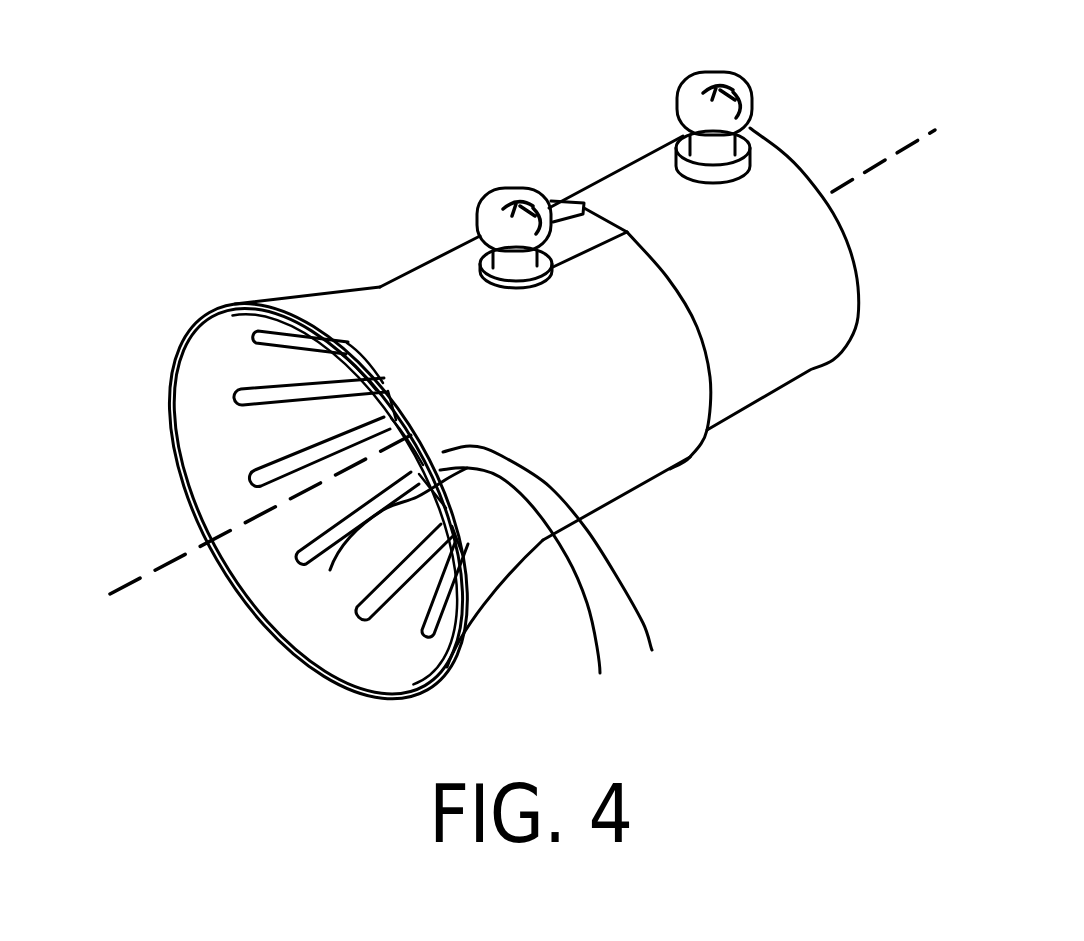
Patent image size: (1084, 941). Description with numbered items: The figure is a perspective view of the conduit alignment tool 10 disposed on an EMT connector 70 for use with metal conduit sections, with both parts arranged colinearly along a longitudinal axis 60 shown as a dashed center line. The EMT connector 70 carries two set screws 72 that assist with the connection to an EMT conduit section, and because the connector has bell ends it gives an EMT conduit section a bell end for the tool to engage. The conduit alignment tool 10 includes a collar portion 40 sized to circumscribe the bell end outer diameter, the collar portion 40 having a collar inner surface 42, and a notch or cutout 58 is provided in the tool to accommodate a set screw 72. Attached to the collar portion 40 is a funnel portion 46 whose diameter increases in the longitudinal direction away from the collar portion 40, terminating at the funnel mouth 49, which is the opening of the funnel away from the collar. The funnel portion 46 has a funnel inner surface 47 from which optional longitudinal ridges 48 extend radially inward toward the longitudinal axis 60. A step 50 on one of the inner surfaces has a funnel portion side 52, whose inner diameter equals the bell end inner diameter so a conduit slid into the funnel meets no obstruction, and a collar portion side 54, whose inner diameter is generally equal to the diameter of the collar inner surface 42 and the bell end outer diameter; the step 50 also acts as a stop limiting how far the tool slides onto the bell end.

The conduit alignment tool 10 is at (377, 287).
The collar portion 40 is at (627, 497).
The collar inner surface 42 is at (563, 571).
The funnel portion 46 is at (452, 663).
The funnel inner surface 47 is at (407, 653).
The longitudinal ridges 48 is at (308, 560).
The funnel mouth 49 is at (152, 518).
The step 50 is at (443, 452).
The funnel portion side 52 is at (330, 570).
The collar portion side 54 is at (532, 592).
The notch or cutout 58 is at (580, 227).
The longitudinal axis 60 is at (875, 160).
The EMT connector 70 is at (623, 167).
The set screw 72 is at (490, 193).